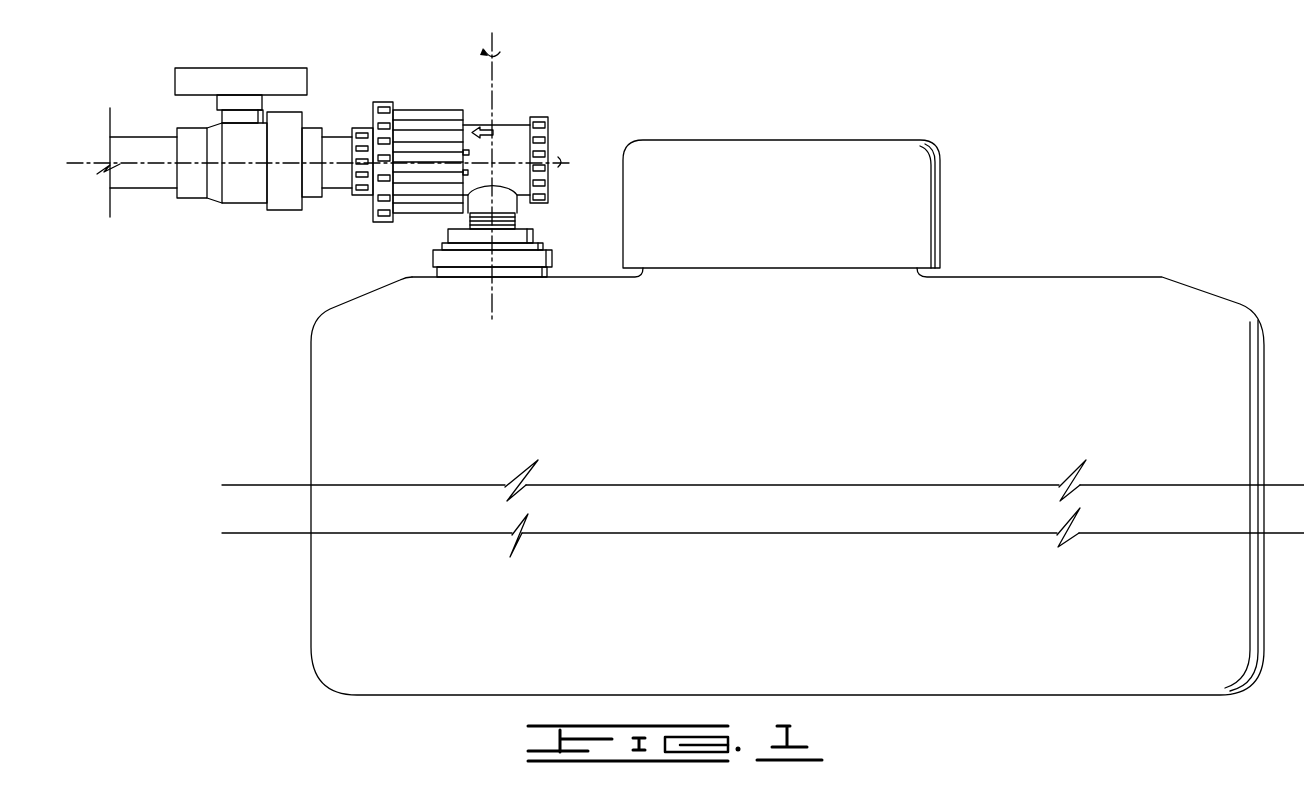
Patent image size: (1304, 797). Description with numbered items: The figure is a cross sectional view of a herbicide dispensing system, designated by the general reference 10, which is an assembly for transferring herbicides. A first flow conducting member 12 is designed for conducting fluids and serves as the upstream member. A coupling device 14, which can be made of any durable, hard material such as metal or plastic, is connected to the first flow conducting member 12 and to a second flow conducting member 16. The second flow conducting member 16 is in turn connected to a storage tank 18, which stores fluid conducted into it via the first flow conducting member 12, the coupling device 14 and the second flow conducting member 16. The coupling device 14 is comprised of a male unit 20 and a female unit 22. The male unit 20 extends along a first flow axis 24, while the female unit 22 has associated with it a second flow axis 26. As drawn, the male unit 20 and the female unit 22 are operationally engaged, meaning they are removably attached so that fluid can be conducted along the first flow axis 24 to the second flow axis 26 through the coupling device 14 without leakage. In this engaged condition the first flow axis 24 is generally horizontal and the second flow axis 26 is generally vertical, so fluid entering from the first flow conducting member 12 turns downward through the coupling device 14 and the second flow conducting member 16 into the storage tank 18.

The assembly for transferring herbicides 10 is at (240, 294).
The first flow conducting member 12 is at (337, 133).
The coupling device 14 is at (524, 107).
The second flow conducting member 16 is at (433, 250).
The storage tank 18 is at (311, 418).
The male unit 20 is at (441, 110).
The female unit 22 is at (517, 207).
The first flow axis 24 is at (562, 157).
The second flow axis 26 is at (496, 52).